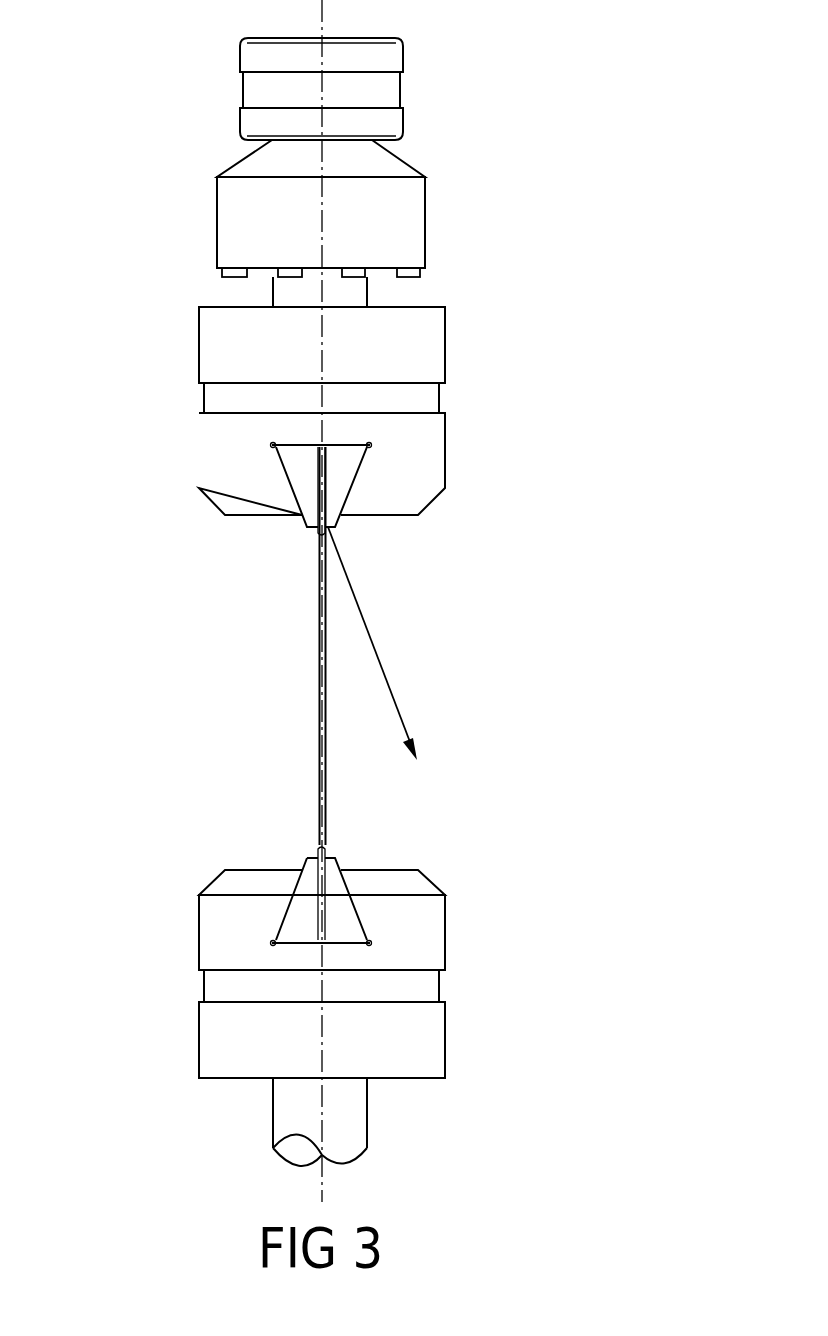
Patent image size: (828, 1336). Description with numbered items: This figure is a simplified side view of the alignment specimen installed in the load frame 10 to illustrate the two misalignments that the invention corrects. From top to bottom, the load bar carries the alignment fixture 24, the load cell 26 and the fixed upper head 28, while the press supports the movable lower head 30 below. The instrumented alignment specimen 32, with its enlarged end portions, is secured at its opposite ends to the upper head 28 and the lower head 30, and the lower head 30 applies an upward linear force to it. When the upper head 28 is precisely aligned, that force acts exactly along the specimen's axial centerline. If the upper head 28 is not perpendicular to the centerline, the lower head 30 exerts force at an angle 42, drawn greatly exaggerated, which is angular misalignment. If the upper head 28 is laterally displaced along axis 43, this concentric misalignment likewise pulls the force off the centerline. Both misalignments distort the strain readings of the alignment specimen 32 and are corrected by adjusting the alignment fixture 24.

The load frame 10 is at (575, 238).
The alignment fixture 24 is at (260, 98).
The load cell 26 is at (233, 242).
The fixed upper head 28 is at (224, 365).
The movable lower head 30 is at (232, 1043).
The alignment specimen 32 is at (252, 666).
The angle 42 is at (392, 690).
The axis 43 is at (625, 869).